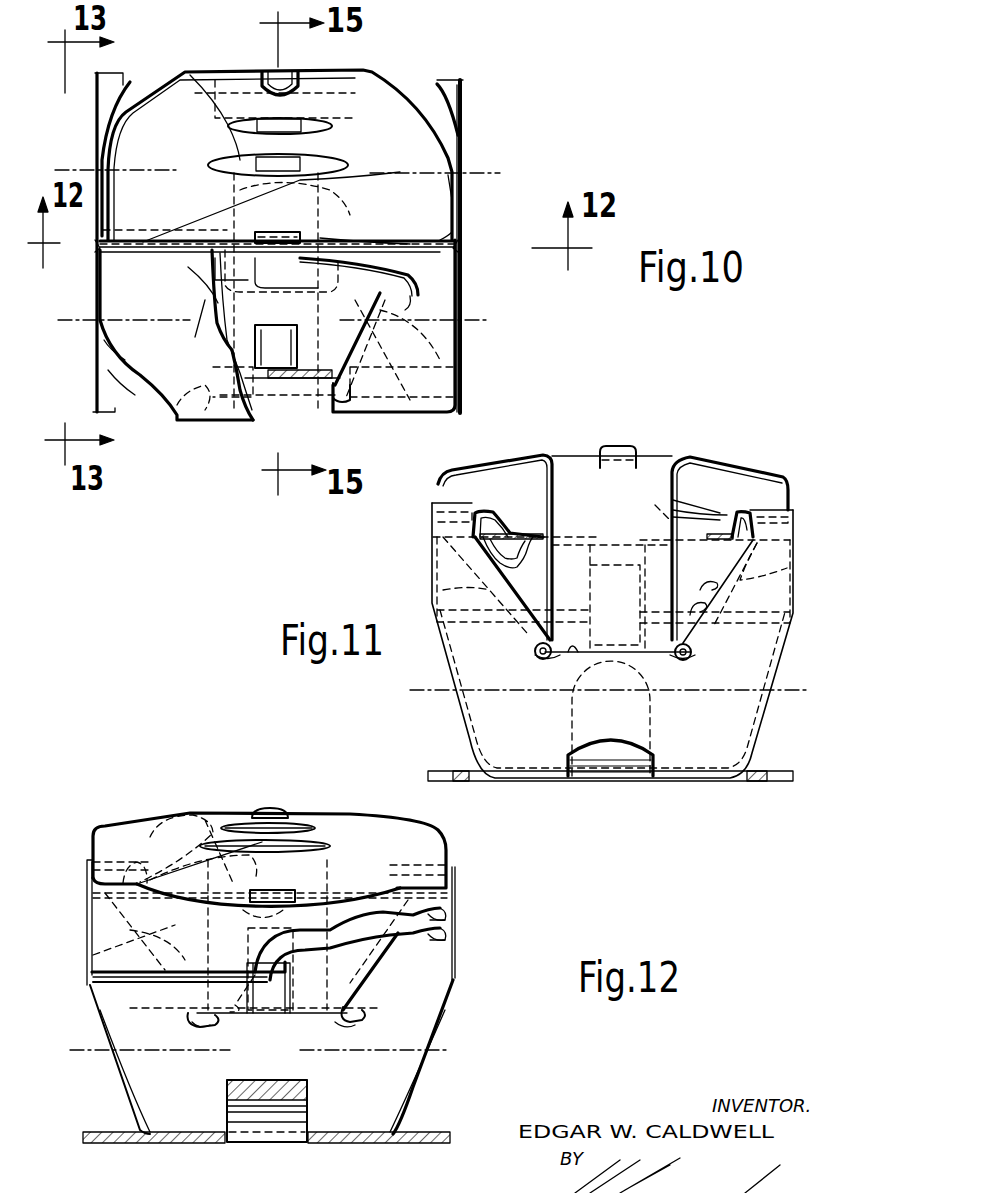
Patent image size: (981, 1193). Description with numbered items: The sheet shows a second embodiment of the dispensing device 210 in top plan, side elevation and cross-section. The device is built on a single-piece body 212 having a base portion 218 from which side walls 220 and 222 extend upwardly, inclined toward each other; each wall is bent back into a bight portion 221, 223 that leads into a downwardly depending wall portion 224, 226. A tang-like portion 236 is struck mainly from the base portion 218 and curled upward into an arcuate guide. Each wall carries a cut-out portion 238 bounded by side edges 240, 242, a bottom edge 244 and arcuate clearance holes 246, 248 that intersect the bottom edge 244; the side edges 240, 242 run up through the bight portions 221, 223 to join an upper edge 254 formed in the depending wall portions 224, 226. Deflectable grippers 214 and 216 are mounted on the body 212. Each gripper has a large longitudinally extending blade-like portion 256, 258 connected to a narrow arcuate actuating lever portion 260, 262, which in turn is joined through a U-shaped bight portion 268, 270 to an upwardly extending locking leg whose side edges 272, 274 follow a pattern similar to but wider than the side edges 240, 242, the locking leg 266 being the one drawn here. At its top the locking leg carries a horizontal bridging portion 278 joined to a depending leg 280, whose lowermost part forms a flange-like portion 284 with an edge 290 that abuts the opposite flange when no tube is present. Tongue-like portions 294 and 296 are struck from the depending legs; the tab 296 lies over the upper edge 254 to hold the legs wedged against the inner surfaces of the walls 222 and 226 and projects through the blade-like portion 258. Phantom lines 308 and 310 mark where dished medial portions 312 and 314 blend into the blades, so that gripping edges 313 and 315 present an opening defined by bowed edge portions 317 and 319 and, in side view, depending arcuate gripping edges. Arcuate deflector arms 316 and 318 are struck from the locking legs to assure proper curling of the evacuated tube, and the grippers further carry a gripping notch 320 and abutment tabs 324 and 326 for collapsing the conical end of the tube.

In FIG. 10, the dispensing device 210 is at (478, 98).
In FIG. 10, the single-piece body 212 is at (470, 150).
In FIG. 10, the deflectable gripper 214 is at (406, 93).
In FIG. 10, the deflectable gripper 216 is at (150, 405).
In FIG. 11, the base portion 218 is at (530, 782).
In FIG. 12, the base portion 218 is at (332, 1150).
In FIG. 10, the side wall 220 is at (110, 94).
In FIG. 12, the side wall 220 is at (420, 1078).
In FIG. 12, the bight portion 221 is at (87, 865).
In FIG. 10, the side wall 222 is at (110, 390).
In FIG. 11, the side wall 222 is at (458, 715).
In FIG. 11, the bight portion 223 is at (432, 509).
In FIG. 10, the depending wall portion 224 is at (456, 246).
In FIG. 12, the depending wall portion 224 is at (88, 925).
In FIG. 10, the depending wall portion 226 is at (462, 251).
In FIG. 10, the tang-like portion 236 is at (342, 198).
In FIG. 11, the tang-like portion 236 is at (660, 716).
In FIG. 12, the tang-like portion 236 is at (308, 1095).
In FIG. 11, the cut-out portion 238 is at (750, 602).
In FIG. 12, the cut-out portion 238 is at (198, 1020).
In FIG. 11, the side edge 240 is at (535, 632).
In FIG. 12, the side edge 240 is at (355, 1012).
In FIG. 10, the side edge 242 is at (412, 296).
In FIG. 11, the side edge 242 is at (693, 622).
In FIG. 12, the side edge 242 is at (200, 1018).
In FIG. 11, the bottom edge 244 is at (575, 652).
In FIG. 11, the arcuate clearance hole 246 is at (538, 660).
In FIG. 12, the arcuate clearance hole 246 is at (325, 1027).
In FIG. 11, the arcuate clearance hole 248 is at (690, 660).
In FIG. 12, the arcuate clearance hole 248 is at (192, 1018).
In FIG. 10, the upper edge 254 is at (368, 268).
In FIG. 11, the upper edge 254 is at (513, 530).
In FIG. 12, the upper edge 254 is at (188, 876).
In FIG. 10, the blade-like portion 256 is at (456, 198).
In FIG. 12, the blade-like portion 256 is at (92, 855).
In FIG. 10, the blade-like portion 258 is at (104, 355).
In FIG. 11, the blade-like portion 258 is at (791, 498).
In FIG. 10, the actuating lever portion 260 is at (366, 78).
In FIG. 12, the actuating lever portion 260 is at (378, 827).
In FIG. 10, the actuating lever portion 262 is at (173, 427).
In FIG. 11, the actuating lever portion 262 is at (675, 517).
In FIG. 10, the locking leg 266 is at (465, 376).
In FIG. 12, the U-shaped bight portion 268 is at (230, 1018).
In FIG. 10, the U-shaped bight portion 270 is at (338, 402).
In FIG. 11, the U-shaped bight portion 270 is at (580, 695).
In FIG. 11, the side edge 272 is at (435, 564).
In FIG. 12, the side edge 272 is at (368, 983).
In FIG. 11, the side edge 274 is at (795, 575).
In FIG. 12, the side edge 274 is at (88, 960).
In FIG. 10, the bridging portion 278 is at (405, 332).
In FIG. 11, the bridging portion 278 is at (516, 528).
In FIG. 12, the depending leg 280 is at (455, 940).
In FIG. 12, the flange-like portion 284 is at (122, 980).
In FIG. 12, the edge 290 is at (108, 980).
In FIG. 10, the tongue-like portion 294 is at (305, 237).
In FIG. 10, the tongue-like portion 296 is at (378, 293).
In FIG. 10, the phantom line 308 is at (182, 188).
In FIG. 12, the phantom line 308 is at (173, 855).
In FIG. 10, the phantom line 310 is at (197, 317).
In FIG. 11, the phantom line 310 is at (680, 500).
In FIG. 10, the medial portion 312 is at (205, 215).
In FIG. 12, the medial portion 312 is at (187, 877).
In FIG. 10, the gripping edge 313 is at (440, 252).
In FIG. 10, the medial portion 314 is at (188, 268).
In FIG. 10, the gripping edge 315 is at (113, 240).
In FIG. 10, the arcuate deflector arm 316 is at (332, 128).
In FIG. 12, the arcuate deflector arm 316 is at (303, 995).
In FIG. 10, the bowed edge portion 317 is at (362, 190).
In FIG. 10, the arcuate deflector arm 318 is at (297, 400).
In FIG. 11, the arcuate deflector arm 318 is at (572, 542).
In FIG. 10, the bowed edge portion 319 is at (217, 305).
In FIG. 11, the bowed edge portion 319 is at (663, 503).
In FIG. 10, the gripping notch 320 is at (236, 165).
In FIG. 12, the gripping notch 320 is at (300, 840).
In FIG. 10, the abutment tab 324 is at (292, 94).
In FIG. 12, the abutment tab 324 is at (275, 808).
In FIG. 11, the abutment tab 326 is at (610, 443).